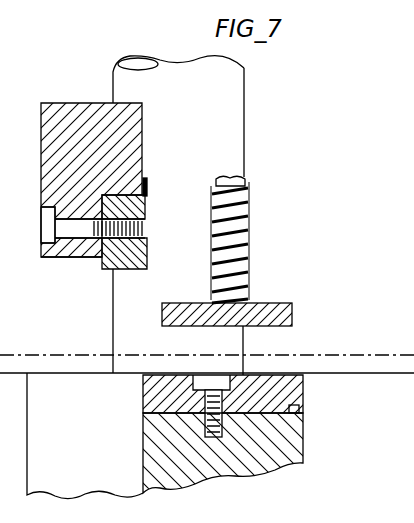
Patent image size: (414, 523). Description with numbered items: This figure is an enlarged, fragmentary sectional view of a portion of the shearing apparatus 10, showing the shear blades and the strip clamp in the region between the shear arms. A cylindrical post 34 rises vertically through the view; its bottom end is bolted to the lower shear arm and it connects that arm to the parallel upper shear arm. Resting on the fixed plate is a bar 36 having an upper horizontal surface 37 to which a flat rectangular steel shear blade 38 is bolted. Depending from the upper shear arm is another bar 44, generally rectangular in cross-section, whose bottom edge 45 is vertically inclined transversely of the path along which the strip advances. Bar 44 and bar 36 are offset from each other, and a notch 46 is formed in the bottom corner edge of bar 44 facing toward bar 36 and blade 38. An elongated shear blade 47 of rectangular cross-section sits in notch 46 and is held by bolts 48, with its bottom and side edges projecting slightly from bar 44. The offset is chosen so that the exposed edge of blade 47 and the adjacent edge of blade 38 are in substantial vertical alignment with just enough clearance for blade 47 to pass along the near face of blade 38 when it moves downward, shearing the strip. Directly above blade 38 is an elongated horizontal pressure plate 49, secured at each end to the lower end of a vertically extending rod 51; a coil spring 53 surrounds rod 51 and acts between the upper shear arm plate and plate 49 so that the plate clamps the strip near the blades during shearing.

The apparatus 10 is at (53, 355).
The cylindrical post 34 is at (237, 111).
The bar 36 is at (300, 444).
The upper horizontal surface 37 is at (300, 410).
The shear blade 38 is at (303, 383).
The bar 44 is at (53, 116).
The bottom edge 45 is at (70, 262).
The notch 46 is at (133, 199).
The shear blade 47 is at (127, 270).
The bolt 48 is at (43, 228).
The pressure plate 49 is at (265, 308).
The rod 51 is at (245, 178).
The coil spring 53 is at (254, 199).